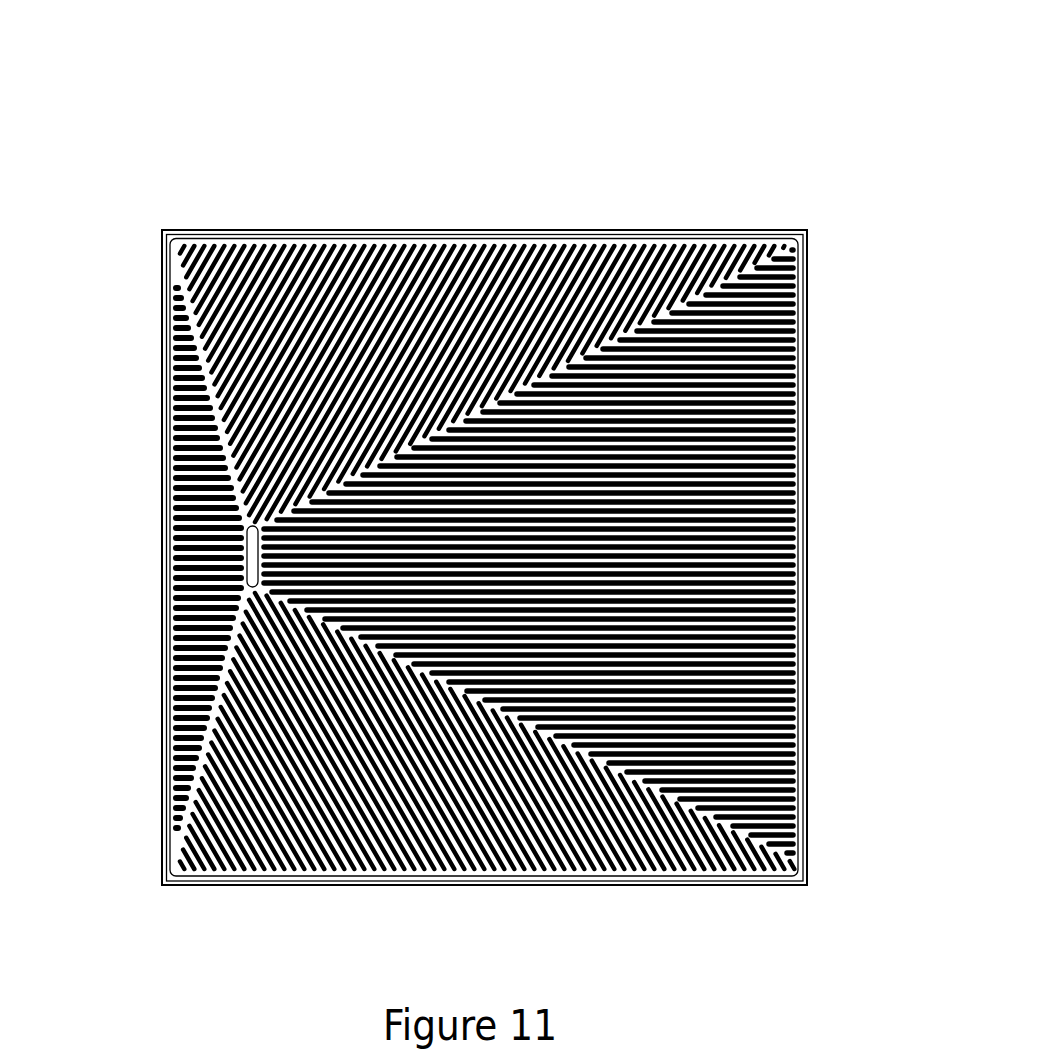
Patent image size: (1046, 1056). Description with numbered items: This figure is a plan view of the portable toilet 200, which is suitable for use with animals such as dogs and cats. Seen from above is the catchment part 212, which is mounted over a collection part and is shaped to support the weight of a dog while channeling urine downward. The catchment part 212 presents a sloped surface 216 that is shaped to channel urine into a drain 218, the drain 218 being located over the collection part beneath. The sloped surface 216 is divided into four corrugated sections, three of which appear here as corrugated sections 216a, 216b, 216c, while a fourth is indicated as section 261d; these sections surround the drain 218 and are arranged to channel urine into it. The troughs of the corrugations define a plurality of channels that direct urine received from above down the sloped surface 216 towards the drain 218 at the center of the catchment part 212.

The portable toilet 200 is at (650, 222).
The catchment part 212 is at (335, 242).
The sloped surface 216 is at (737, 627).
The corrugated section 216a is at (195, 462).
The corrugated section 216b is at (493, 262).
The corrugated section 216c is at (737, 415).
The drain 218 is at (250, 584).
The lower flow field region 261d is at (403, 824).